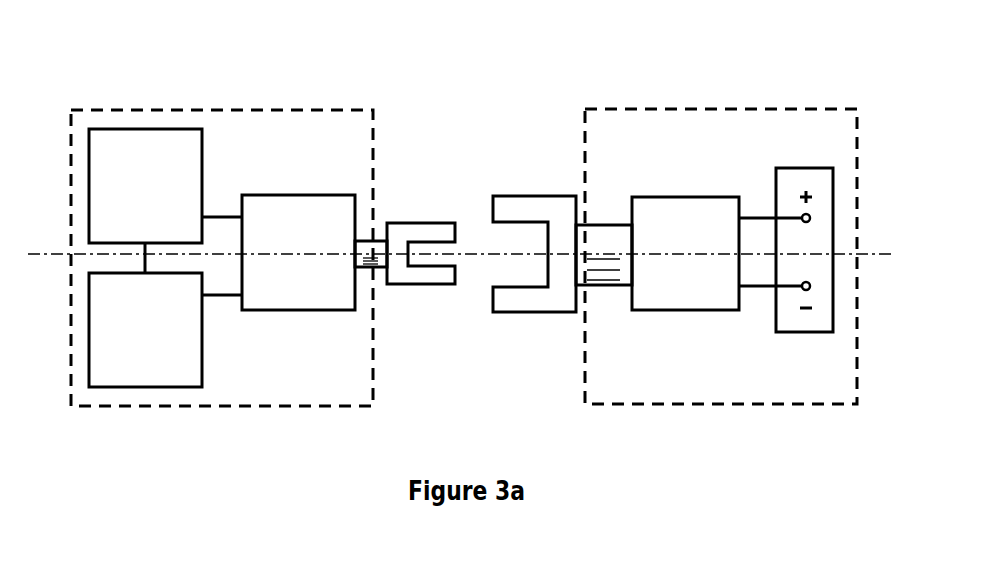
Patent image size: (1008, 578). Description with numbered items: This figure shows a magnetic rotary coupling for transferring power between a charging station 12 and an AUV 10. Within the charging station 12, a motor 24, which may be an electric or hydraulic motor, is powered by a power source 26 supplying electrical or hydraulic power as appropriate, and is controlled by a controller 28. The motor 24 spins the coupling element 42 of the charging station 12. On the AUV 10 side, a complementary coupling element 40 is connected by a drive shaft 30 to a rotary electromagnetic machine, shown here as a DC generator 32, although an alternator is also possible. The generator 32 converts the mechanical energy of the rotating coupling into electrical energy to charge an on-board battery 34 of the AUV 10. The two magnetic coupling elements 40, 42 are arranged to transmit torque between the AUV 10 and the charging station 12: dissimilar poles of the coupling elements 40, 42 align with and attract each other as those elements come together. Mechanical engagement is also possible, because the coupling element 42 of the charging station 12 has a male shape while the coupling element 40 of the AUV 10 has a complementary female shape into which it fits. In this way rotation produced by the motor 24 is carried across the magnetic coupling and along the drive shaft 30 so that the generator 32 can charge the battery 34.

The AUV 10 is at (793, 108).
The charging station 12 is at (165, 108).
The motor 24 is at (284, 234).
The power source 26 is at (131, 198).
The controller 28 is at (131, 342).
The drive shaft 30 is at (603, 240).
The DC generator 32 is at (668, 237).
The on-board battery 34 is at (820, 268).
The magnetic coupling element 40 is at (544, 204).
The magnetic coupling element 42 is at (447, 278).